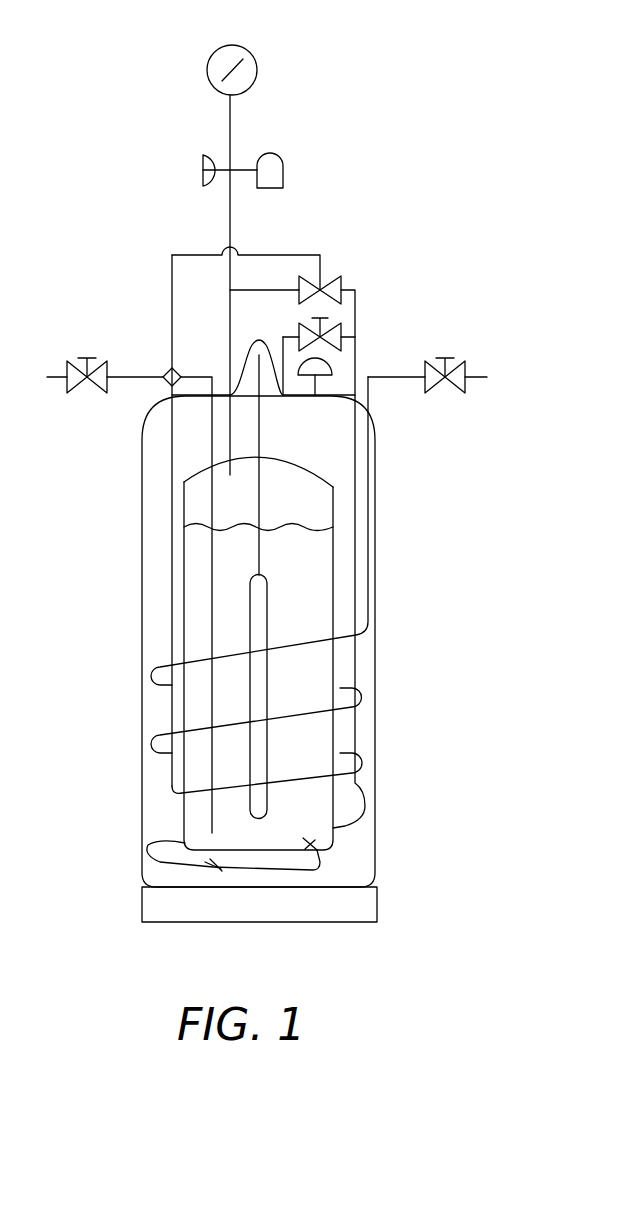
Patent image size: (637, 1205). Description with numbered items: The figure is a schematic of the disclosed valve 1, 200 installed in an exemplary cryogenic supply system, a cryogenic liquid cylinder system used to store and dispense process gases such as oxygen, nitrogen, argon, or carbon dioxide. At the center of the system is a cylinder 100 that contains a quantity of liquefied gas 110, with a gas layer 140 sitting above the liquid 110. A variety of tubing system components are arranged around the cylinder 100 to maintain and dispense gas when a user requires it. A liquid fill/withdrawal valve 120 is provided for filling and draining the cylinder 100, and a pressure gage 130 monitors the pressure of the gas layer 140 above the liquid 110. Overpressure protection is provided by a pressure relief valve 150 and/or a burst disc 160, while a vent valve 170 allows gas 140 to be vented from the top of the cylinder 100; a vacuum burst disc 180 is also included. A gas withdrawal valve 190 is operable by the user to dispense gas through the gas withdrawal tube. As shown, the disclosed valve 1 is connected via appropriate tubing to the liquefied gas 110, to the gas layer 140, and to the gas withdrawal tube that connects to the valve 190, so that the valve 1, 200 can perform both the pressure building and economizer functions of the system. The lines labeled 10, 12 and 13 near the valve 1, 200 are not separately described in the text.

The valve 1 is at (280, 469).
The valve 200 is at (337, 236).
The outlet line 10 is at (348, 287).
The inlet line 12 is at (297, 297).
The fill valve 13 is at (322, 277).
The cylinder 100 is at (378, 688).
The liquefied gas 110 is at (308, 598).
The liquid fill/withdrawal valve 120 is at (68, 386).
The pressure gage 130 is at (257, 55).
The gas layer 140 is at (318, 500).
The pressure relief valve 150 is at (284, 148).
The burst disc 160 is at (190, 182).
The vent valve 170 is at (352, 318).
The vacuum burst disc 180 is at (340, 360).
The gas withdrawal valve 190 is at (467, 368).